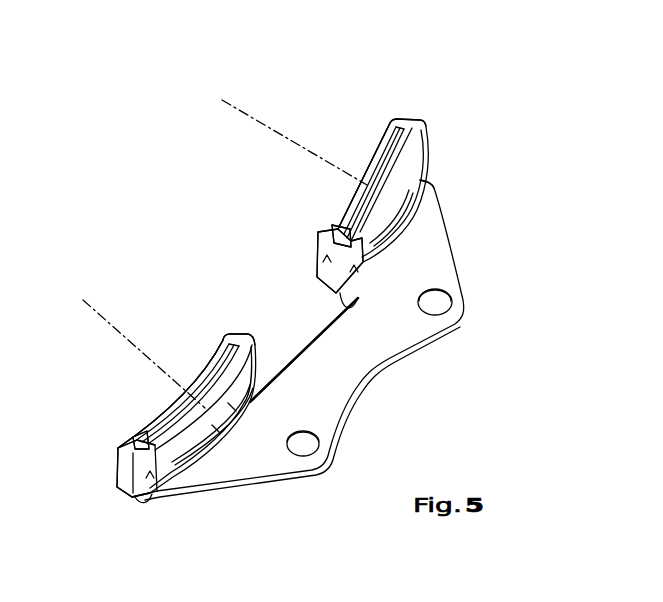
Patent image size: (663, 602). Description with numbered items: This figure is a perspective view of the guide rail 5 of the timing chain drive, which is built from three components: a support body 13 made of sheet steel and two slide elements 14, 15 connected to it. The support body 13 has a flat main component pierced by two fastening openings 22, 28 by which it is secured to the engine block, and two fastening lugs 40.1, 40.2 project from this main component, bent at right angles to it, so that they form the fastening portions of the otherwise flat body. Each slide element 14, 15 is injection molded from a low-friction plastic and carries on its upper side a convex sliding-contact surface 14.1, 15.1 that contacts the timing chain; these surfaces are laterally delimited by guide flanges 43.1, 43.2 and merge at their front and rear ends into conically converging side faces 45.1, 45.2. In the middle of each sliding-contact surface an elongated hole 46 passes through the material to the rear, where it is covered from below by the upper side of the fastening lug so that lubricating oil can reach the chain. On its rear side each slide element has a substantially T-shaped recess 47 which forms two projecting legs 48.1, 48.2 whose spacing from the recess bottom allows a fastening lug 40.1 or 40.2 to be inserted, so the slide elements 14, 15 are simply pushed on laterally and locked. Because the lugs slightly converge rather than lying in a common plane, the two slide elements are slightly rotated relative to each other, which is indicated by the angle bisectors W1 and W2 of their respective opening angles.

The guide rail 5 is at (403, 417).
The support body 13 is at (362, 358).
The slide element 14 is at (406, 114).
The sliding-contact surface 14.1 is at (328, 293).
The slide element 15 is at (256, 333).
The sliding-contact surface 15.1 is at (158, 497).
The fastening opening 22 is at (437, 306).
The fastening opening 28 is at (300, 447).
The fastening lug 40.1 is at (379, 166).
The fastening lug 40.2 is at (200, 375).
The guide flange 43.1 is at (424, 152).
The guide flange 43.2 is at (428, 191).
The conically converging side face 45.1 is at (418, 118).
The conically converging side face 45.2 is at (323, 264).
The elongated hole 46 is at (397, 238).
The T-shaped recess 47 is at (350, 201).
The projecting leg 48.1 is at (381, 133).
The projecting leg 48.2 is at (332, 237).
The angle bisector W1 is at (250, 112).
The angle bisector W2 is at (95, 305).